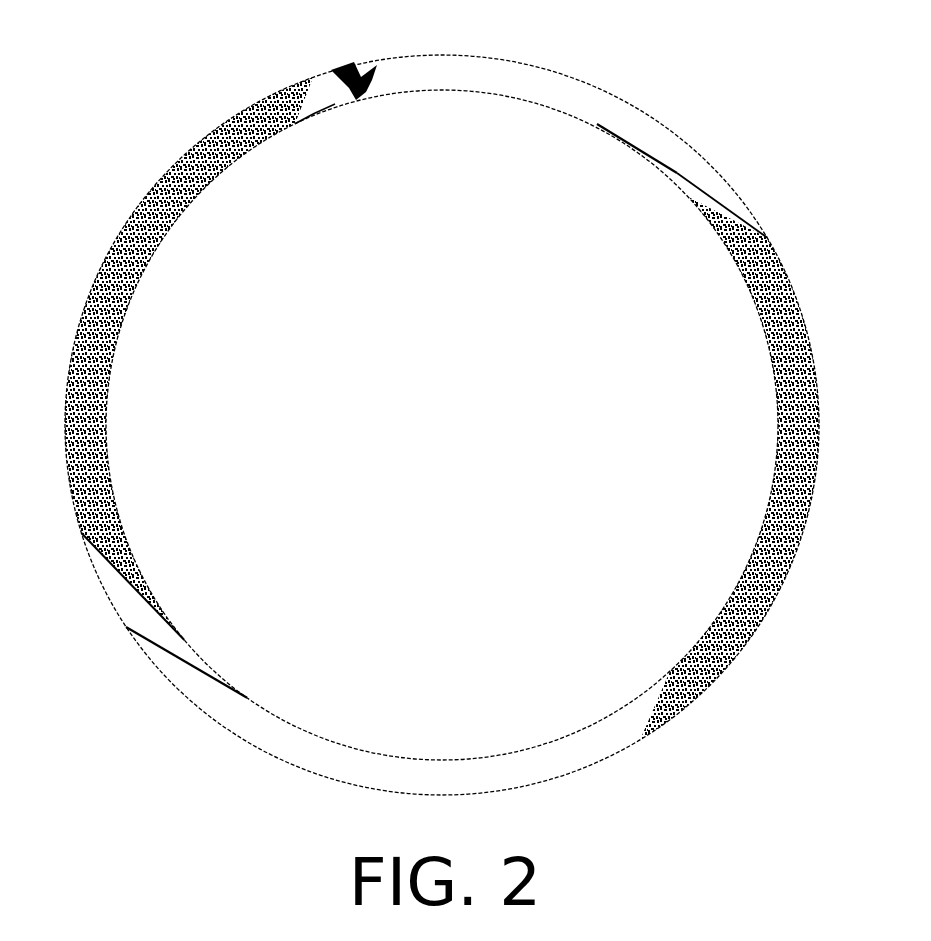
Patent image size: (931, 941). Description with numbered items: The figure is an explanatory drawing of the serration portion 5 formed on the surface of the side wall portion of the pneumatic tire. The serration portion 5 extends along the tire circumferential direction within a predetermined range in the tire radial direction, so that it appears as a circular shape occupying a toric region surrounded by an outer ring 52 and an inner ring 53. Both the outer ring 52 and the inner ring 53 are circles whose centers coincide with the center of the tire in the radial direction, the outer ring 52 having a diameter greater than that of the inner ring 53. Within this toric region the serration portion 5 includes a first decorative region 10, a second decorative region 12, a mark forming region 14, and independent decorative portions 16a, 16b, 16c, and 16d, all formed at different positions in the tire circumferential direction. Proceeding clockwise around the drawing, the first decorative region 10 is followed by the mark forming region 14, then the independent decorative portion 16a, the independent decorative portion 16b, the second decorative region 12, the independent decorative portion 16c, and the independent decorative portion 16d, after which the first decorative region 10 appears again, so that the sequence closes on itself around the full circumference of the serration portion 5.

The serration portion 5 is at (150, 156).
The first decorative region 10 is at (150, 306).
The second decorative region 12 is at (758, 436).
The mark forming region 14 is at (452, 93).
The independent decorative portion 16a is at (633, 139).
The independent decorative portion 16b is at (677, 176).
The independent decorative portion 16c is at (180, 653).
The independent decorative portion 16d is at (150, 596).
The outer ring 52 is at (288, 87).
The inner ring 53 is at (301, 122).